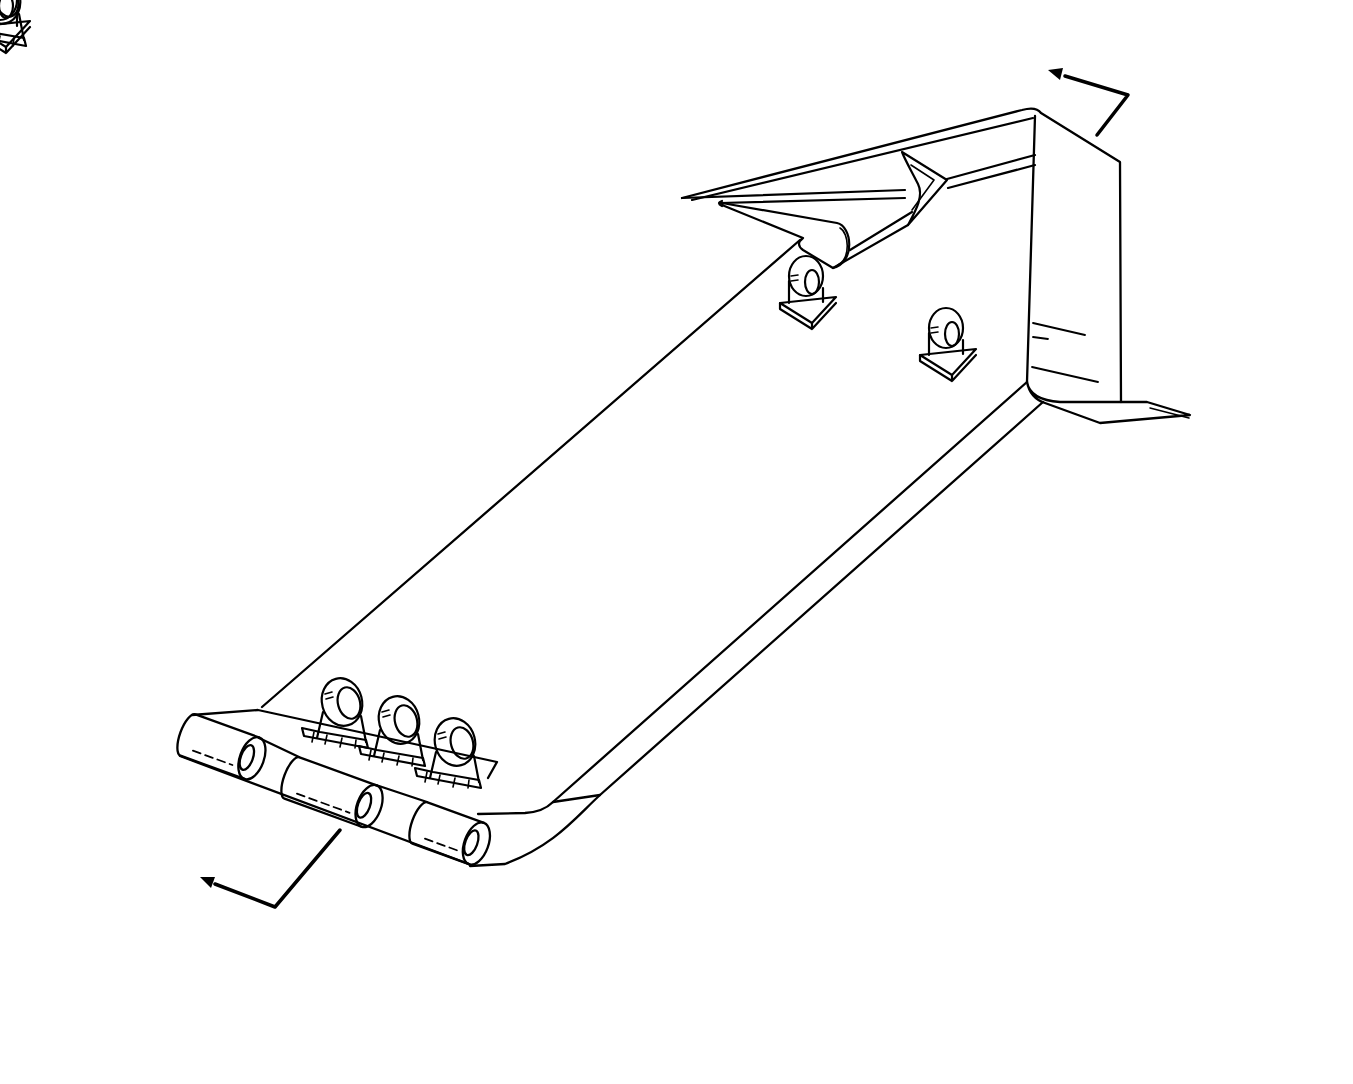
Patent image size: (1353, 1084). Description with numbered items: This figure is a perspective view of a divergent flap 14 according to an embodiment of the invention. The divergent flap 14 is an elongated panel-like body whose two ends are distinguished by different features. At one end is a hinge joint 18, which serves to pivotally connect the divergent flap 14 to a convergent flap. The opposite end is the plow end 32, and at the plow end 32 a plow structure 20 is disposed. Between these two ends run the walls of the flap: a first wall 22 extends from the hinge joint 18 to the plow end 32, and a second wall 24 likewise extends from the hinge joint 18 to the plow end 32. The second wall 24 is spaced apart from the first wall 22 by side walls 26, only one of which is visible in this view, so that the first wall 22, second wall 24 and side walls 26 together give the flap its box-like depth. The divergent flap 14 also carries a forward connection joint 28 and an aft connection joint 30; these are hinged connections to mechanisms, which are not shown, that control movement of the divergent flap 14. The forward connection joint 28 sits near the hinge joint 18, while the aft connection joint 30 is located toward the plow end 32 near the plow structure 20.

The divergent flap 14 is at (516, 479).
The hinge joint 18 is at (185, 725).
The plow structure 20 is at (858, 151).
The first wall 22 is at (672, 657).
The second wall 24 is at (993, 452).
The side walls 26 is at (830, 573).
The forward connection joint 28 is at (325, 686).
The aft connection joint 30 is at (795, 268).
The plow end 32 is at (1186, 203).